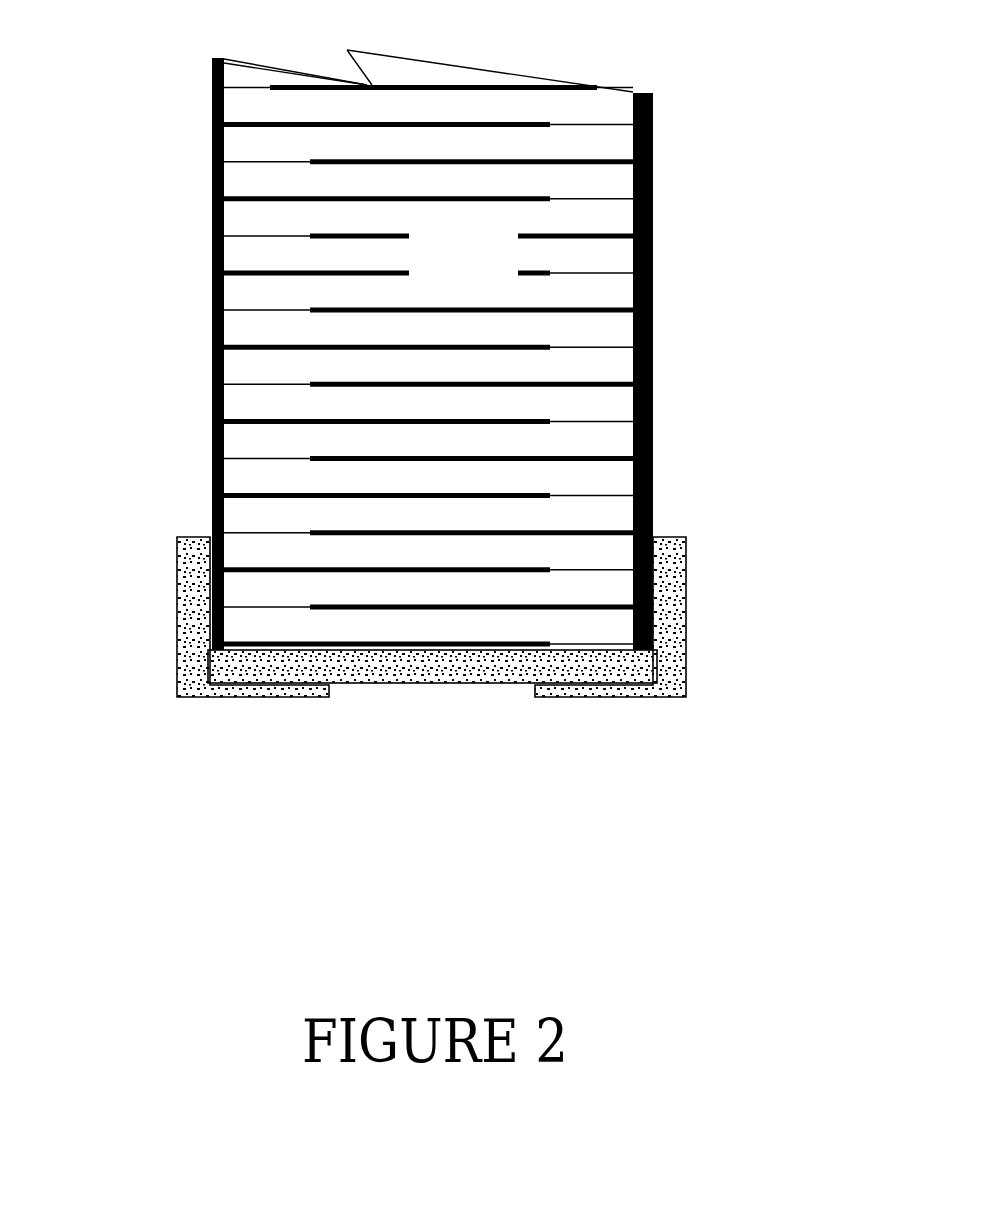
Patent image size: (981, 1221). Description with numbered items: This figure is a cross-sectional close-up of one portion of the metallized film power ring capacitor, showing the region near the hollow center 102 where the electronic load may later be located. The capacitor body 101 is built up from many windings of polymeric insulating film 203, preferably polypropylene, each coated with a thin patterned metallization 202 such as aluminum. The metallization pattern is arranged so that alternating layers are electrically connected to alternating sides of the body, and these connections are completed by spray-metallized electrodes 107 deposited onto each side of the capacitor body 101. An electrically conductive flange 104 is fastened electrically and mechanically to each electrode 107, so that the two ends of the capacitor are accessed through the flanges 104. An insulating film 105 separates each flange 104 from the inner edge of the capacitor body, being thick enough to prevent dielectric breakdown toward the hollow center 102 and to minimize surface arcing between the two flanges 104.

The capacitor body 101 is at (347, 347).
The hollow center 102 is at (435, 780).
The electrically conductive flange 104 is at (198, 624).
The insulating film 105 is at (477, 661).
The electrode 107 is at (212, 103).
The metallization 202 is at (262, 270).
The polymeric insulating film 203 is at (262, 328).